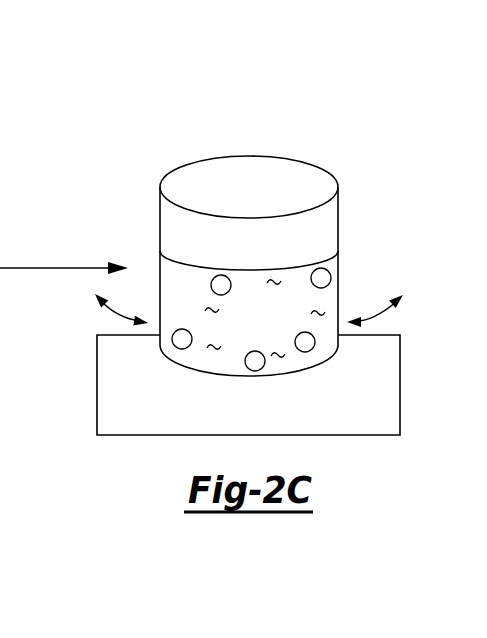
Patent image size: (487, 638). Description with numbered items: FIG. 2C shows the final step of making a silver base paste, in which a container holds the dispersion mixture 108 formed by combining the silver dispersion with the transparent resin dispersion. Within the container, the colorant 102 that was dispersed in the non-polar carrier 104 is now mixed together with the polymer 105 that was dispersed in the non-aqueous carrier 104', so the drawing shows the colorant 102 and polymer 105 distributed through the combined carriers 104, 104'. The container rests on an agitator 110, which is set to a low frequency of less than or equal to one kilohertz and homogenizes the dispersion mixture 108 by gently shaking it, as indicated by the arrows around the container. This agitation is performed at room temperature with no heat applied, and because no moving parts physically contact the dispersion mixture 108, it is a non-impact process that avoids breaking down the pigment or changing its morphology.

The colorant 102 is at (224, 274).
The non-polar carrier 104 is at (309, 273).
The non-aqueous carrier 104' is at (309, 273).
The polymer 105 is at (180, 286).
The dispersion mixture 108 is at (265, 322).
The agitator 110 is at (370, 421).